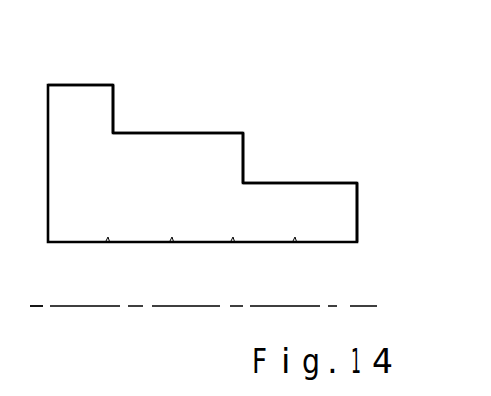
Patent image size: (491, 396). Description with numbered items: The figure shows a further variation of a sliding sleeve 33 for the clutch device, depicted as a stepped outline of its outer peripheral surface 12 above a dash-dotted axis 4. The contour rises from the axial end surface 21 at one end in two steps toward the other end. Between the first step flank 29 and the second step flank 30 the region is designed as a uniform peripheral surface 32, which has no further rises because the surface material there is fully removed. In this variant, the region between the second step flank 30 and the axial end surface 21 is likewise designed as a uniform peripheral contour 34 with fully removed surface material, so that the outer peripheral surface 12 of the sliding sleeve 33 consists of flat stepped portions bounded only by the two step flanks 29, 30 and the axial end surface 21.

The axis of rotation 4 is at (50, 305).
The outer peripheral surface 12 is at (83, 83).
The axial end surface 21 is at (358, 212).
The first step flank 29 is at (112, 115).
The second step flank 30 is at (243, 153).
The uniform peripheral surface 32 is at (157, 132).
The sliding sleeve 33 is at (172, 75).
The uniform peripheral contour 34 is at (292, 183).